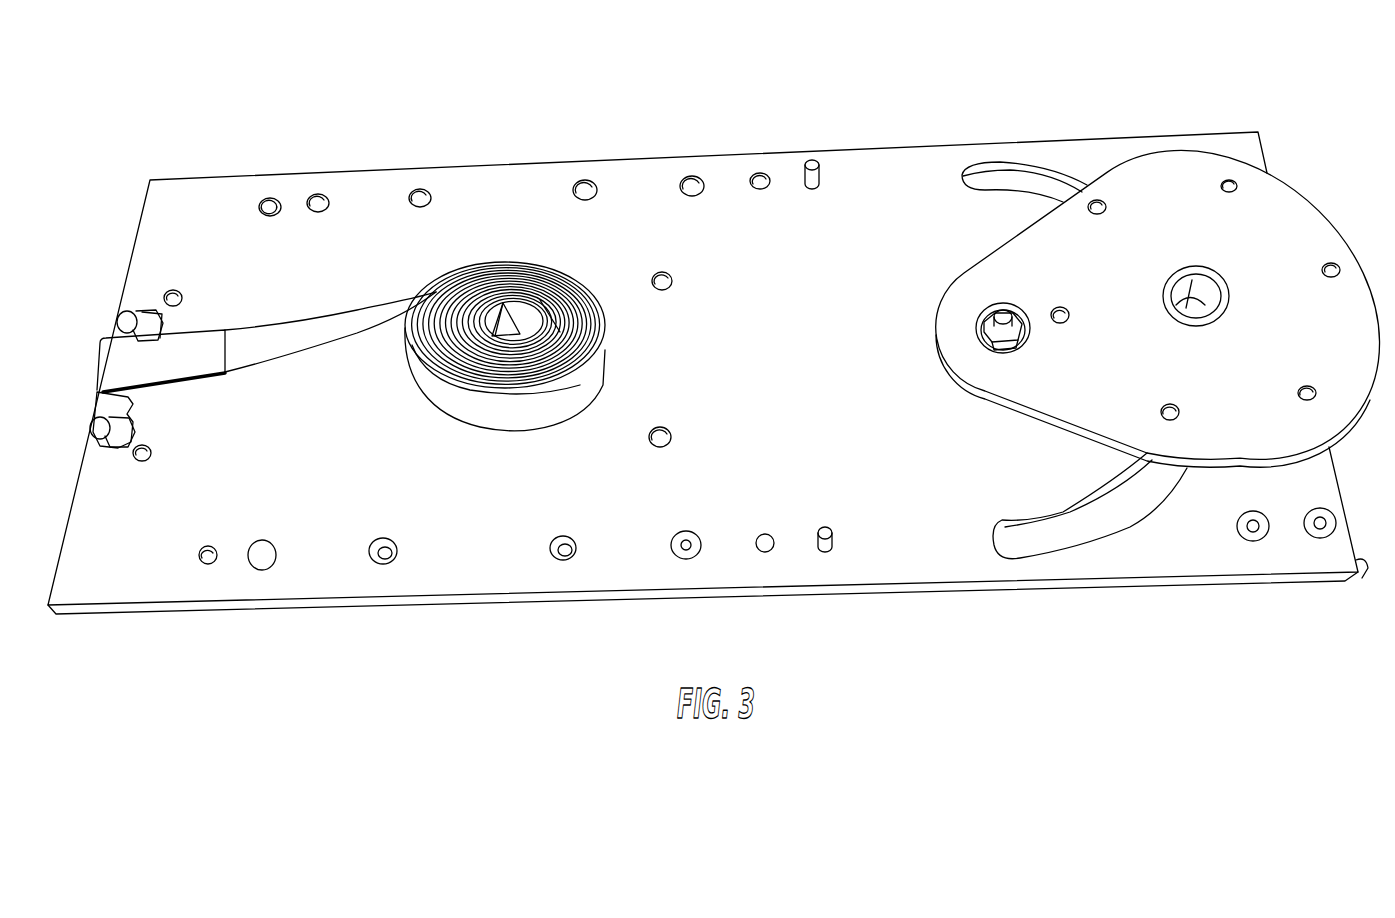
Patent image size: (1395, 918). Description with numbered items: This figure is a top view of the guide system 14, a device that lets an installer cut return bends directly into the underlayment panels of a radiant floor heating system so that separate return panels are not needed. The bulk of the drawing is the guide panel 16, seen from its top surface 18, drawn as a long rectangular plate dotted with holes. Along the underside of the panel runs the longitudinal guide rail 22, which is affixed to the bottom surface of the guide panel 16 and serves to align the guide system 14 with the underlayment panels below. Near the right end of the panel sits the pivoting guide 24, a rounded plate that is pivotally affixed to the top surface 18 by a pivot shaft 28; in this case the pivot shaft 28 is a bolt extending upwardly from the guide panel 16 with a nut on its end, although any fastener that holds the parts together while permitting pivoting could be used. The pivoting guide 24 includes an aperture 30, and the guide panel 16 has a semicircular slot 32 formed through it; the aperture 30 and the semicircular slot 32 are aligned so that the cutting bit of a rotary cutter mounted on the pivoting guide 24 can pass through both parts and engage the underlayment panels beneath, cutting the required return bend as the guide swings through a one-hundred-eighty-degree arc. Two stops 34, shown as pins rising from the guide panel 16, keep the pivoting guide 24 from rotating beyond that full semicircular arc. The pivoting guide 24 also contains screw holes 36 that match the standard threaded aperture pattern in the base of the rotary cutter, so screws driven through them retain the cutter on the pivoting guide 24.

The guide system 14 is at (880, 115).
The guide panel 16 is at (507, 176).
The top surface 18 is at (720, 364).
The longitudinal guide rail 22 is at (1360, 578).
The pivoting guide 24 is at (1300, 205).
The pivot shaft 28 is at (1000, 340).
The aperture 30 is at (1190, 300).
The semicircular slot 32 is at (1075, 535).
The stops 34 is at (819, 177).
The screw holes 36 is at (1328, 270).